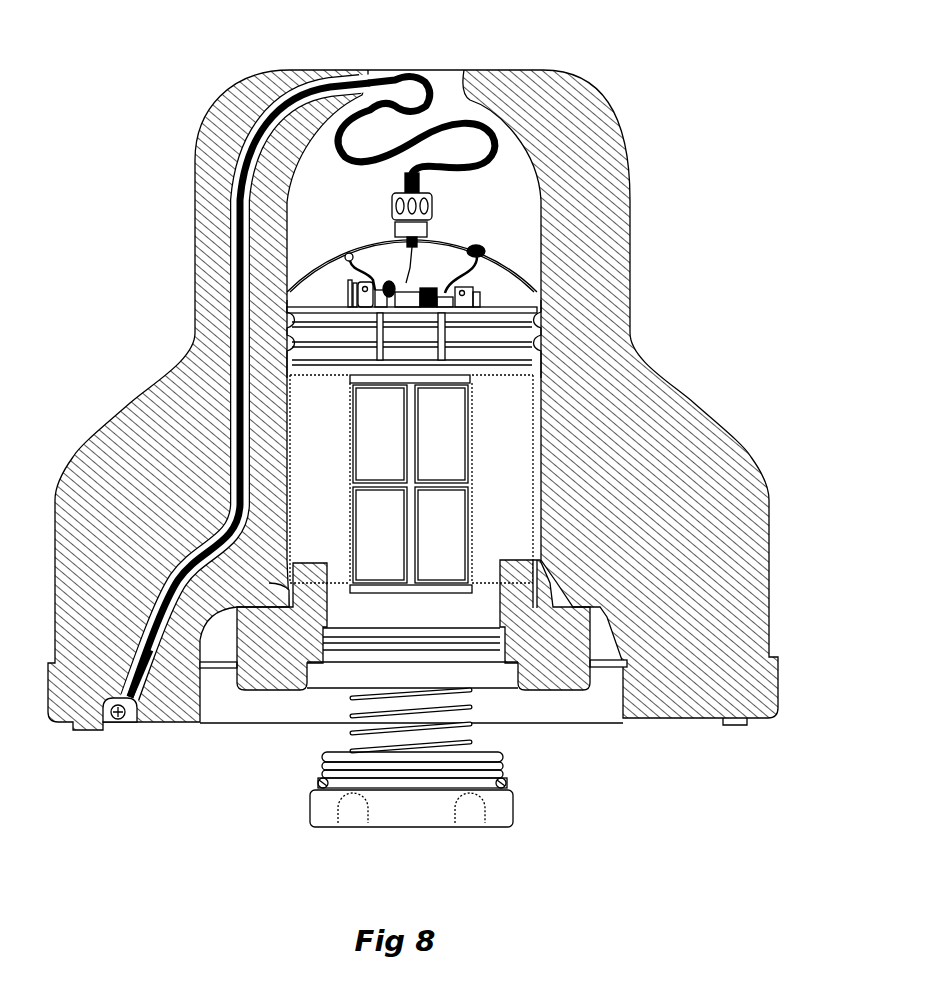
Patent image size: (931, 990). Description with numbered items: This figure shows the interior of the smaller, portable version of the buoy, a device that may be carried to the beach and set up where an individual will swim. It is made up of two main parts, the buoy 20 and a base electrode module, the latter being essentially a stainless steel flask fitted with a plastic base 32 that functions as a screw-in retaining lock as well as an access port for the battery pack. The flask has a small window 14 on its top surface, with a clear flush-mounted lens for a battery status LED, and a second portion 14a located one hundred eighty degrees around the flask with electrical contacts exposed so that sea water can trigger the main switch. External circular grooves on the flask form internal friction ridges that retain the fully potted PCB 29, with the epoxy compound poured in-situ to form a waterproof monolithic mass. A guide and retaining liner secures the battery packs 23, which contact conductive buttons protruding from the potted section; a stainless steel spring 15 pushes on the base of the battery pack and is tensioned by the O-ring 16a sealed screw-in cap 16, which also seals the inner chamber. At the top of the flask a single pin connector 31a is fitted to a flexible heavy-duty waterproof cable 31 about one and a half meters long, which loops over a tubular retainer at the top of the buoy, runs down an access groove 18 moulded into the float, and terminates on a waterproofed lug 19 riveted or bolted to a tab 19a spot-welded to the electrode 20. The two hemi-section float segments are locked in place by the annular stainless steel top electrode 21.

The window 14 is at (346, 255).
The second portion 14a is at (478, 248).
The spring 15 is at (352, 735).
The screw in cap 16 is at (503, 813).
The seal ring 16a is at (507, 781).
The access groove 18 is at (240, 107).
The waterproofed lug 19 is at (137, 702).
The tab 19a is at (107, 720).
The buoy 20 is at (128, 433).
The annulus stainless steel top electrode 21 is at (745, 725).
The battery packs 23 is at (447, 453).
The PCB 29 is at (480, 294).
The cable 31 is at (441, 128).
The single pin connector 31a is at (396, 193).
The base 32 is at (555, 580).